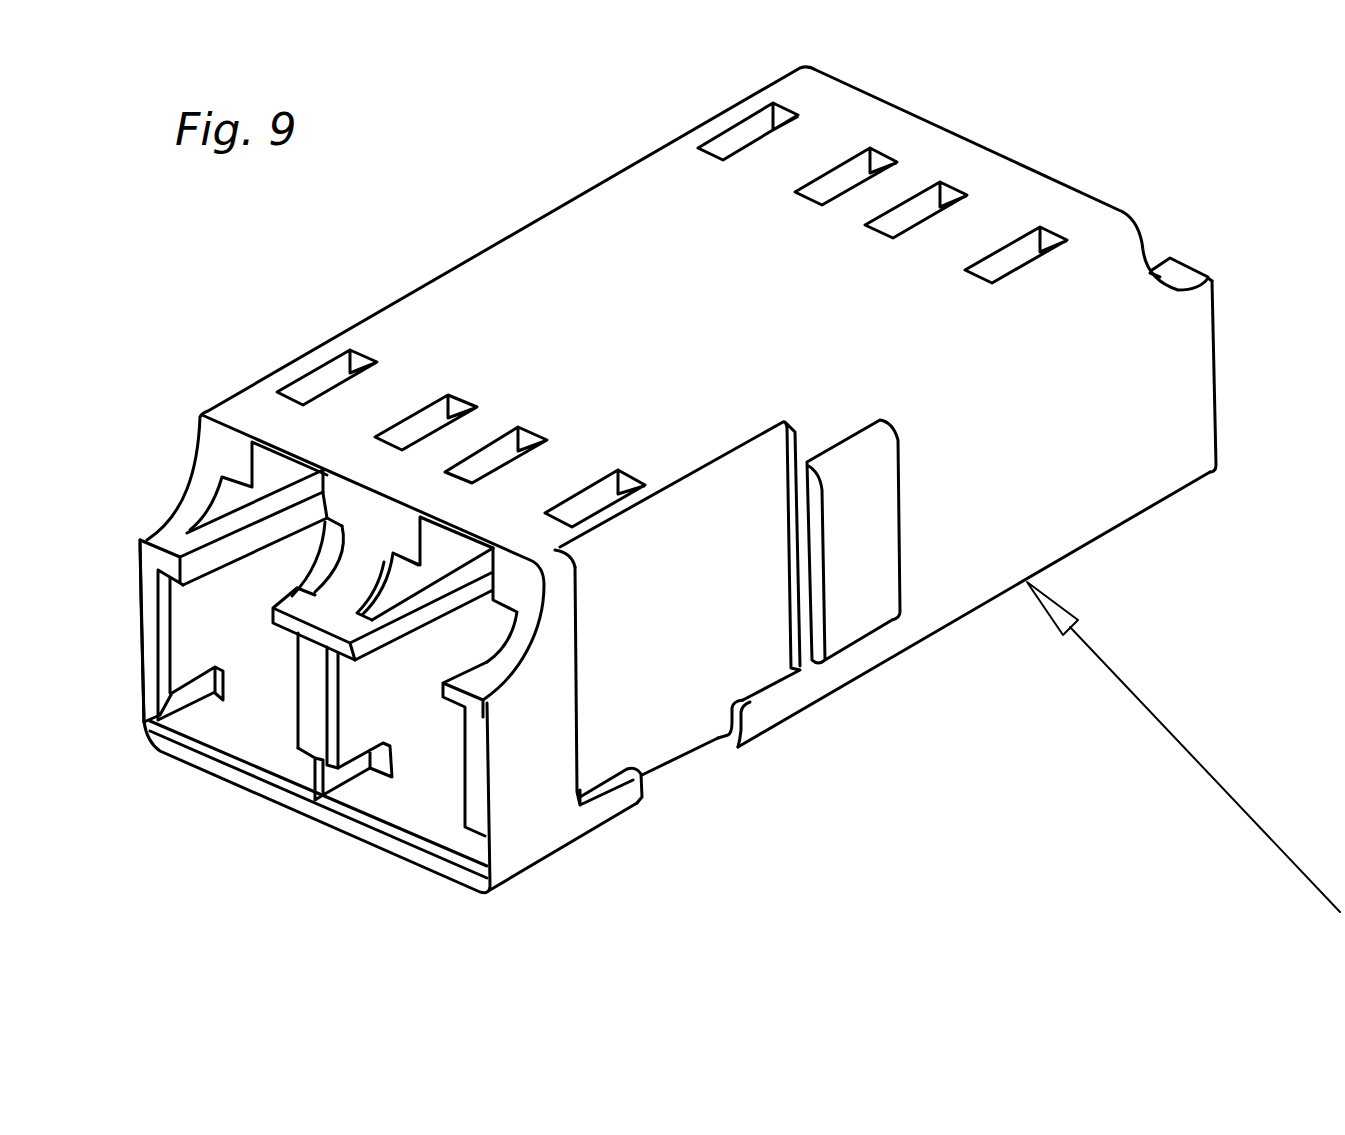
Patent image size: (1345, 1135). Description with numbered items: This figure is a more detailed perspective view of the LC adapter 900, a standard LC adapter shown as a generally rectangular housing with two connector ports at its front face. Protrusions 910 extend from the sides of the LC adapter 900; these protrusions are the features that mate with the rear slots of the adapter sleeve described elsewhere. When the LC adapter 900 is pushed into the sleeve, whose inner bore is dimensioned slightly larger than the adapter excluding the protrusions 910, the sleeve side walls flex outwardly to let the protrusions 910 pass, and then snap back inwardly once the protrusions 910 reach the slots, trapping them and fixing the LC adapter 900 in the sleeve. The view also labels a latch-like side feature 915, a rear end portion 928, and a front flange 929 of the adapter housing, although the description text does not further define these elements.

The LC adapter 900 is at (300, 250).
The protrusions 910 is at (893, 547).
The latch 915 is at (736, 611).
The rear end portion 928 is at (1230, 392).
The flange 929 is at (141, 637).